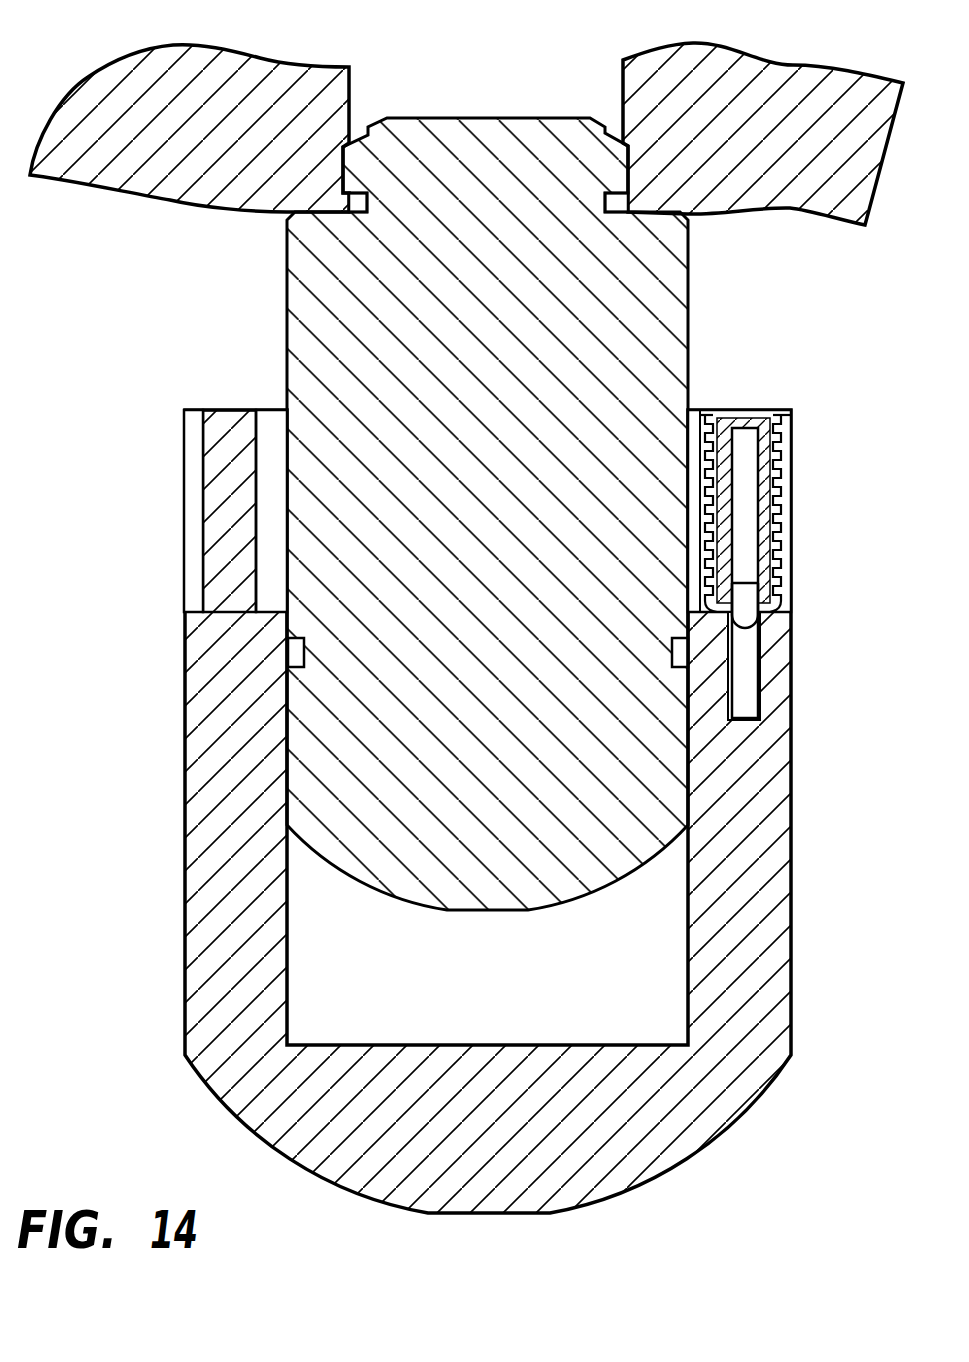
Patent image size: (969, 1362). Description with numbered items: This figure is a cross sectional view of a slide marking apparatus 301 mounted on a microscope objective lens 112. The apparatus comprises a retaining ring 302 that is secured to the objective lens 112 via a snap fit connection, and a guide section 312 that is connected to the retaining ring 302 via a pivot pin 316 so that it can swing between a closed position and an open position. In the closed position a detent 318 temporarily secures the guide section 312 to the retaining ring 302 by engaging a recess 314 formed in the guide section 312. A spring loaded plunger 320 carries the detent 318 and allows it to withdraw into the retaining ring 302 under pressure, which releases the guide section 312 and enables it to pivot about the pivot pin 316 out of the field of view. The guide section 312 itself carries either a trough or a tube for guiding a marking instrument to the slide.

The objective lens 112 is at (287, 363).
The slide marking apparatus 301 is at (483, 802).
The retaining ring 302 is at (185, 410).
The guide section 312 is at (185, 745).
The recess 314 is at (745, 667).
The pivot pin 316 is at (218, 530).
The detent 318 is at (742, 611).
The spring loaded plunger 320 is at (785, 423).